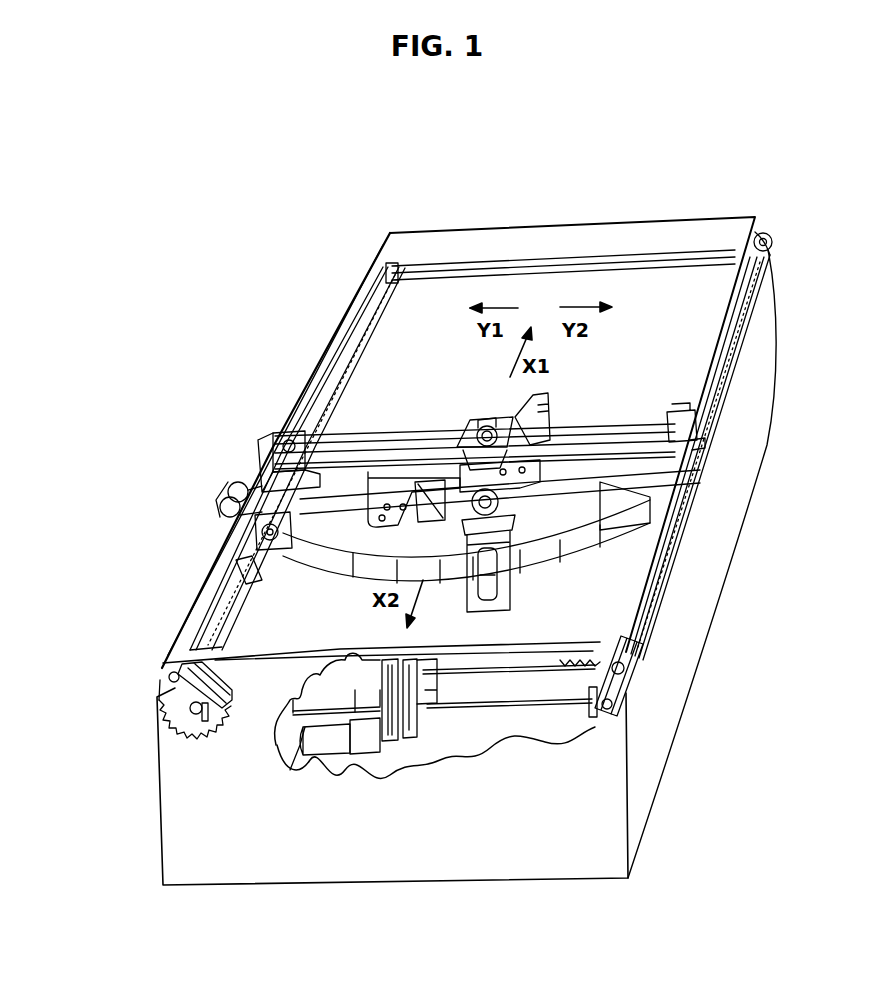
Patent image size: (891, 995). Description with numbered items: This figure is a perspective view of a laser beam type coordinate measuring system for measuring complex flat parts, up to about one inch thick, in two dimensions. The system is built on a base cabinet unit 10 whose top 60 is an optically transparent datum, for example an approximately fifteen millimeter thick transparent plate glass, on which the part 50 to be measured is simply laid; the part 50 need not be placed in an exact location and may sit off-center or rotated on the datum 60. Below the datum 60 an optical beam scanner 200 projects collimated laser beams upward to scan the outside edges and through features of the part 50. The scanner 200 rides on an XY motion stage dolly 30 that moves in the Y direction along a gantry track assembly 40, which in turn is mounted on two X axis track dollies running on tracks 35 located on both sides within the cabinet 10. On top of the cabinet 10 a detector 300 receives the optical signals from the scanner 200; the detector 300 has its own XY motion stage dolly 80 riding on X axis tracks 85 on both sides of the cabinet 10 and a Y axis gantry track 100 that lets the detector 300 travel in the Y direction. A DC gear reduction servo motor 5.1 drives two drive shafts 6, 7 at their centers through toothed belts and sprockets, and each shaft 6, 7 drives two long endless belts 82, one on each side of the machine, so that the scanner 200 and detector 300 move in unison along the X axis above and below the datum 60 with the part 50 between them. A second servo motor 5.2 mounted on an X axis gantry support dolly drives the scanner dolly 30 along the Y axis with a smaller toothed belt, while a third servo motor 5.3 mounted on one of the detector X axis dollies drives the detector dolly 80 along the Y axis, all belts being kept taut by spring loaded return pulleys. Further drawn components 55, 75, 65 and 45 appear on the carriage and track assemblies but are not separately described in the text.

The base cabinet unit 10 is at (428, 226).
The tracks 35 is at (392, 309).
The top (transparent plate glass datum) 60 is at (695, 296).
The X axis tracks 85 is at (723, 296).
The detector XY motion stage dolly 80 is at (520, 417).
The part 50 is at (560, 405).
The bearing block 55 is at (712, 428).
The end block 75 is at (262, 445).
The detector 300 is at (460, 430).
The Y axis gantry track 100 is at (650, 481).
The arc rack 65 is at (655, 518).
The gantry track assembly 40 is at (663, 545).
The pivot 45 is at (270, 532).
The servo motor S3 5.3 is at (232, 485).
The XY motion stage dolly 30 is at (515, 540).
The optical beam scanner 200 is at (512, 565).
The servo motor S2 5.2 is at (310, 550).
The long belts 82 is at (167, 687).
The drive shaft 7 is at (513, 672).
The drive shaft 6 is at (440, 708).
The servo motor S1 (DC gear reduction motor) 5.1 is at (317, 763).